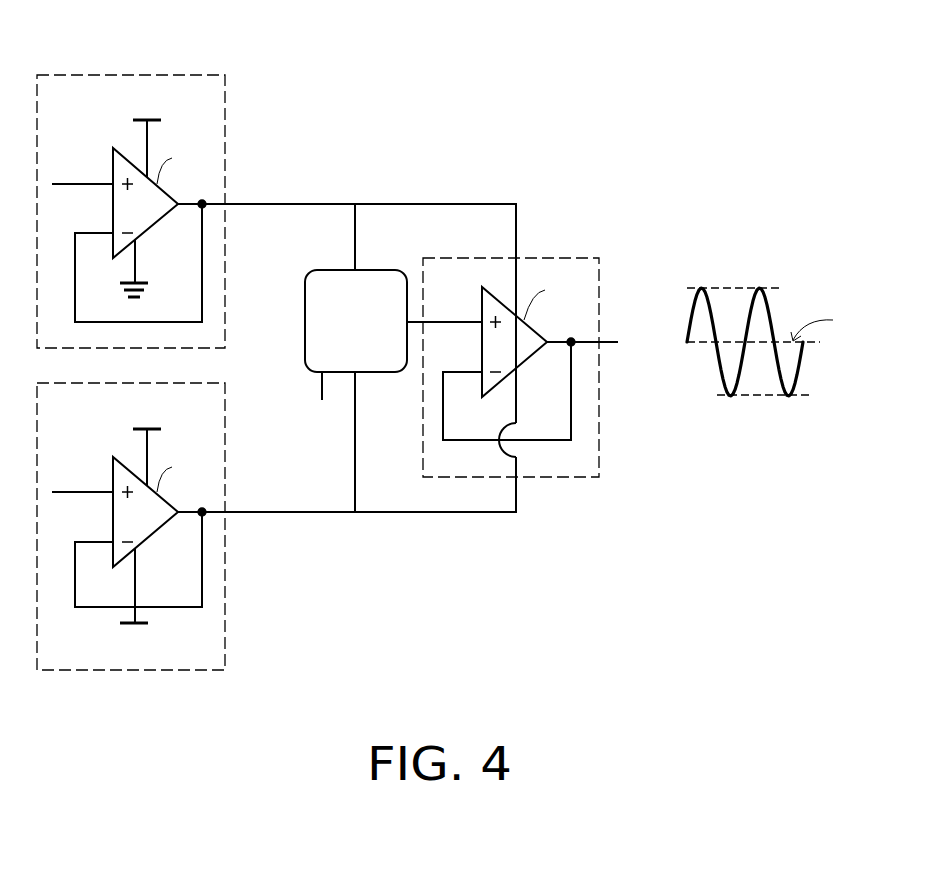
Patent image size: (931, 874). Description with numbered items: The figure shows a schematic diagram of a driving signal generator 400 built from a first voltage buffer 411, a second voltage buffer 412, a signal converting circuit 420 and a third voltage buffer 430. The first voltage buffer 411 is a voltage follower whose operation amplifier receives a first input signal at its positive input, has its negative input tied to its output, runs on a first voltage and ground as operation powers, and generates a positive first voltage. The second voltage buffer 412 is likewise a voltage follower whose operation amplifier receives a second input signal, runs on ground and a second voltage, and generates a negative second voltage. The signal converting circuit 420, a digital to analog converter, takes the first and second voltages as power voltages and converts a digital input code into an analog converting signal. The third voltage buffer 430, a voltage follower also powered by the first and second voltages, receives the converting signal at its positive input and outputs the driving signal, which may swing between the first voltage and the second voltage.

The driving signal generator 400 is at (750, 617).
The first voltage buffer 411 is at (105, 75).
The second voltage buffer 412 is at (110, 672).
The signal converting circuit 420 is at (305, 322).
The third voltage buffer 430 is at (565, 480).